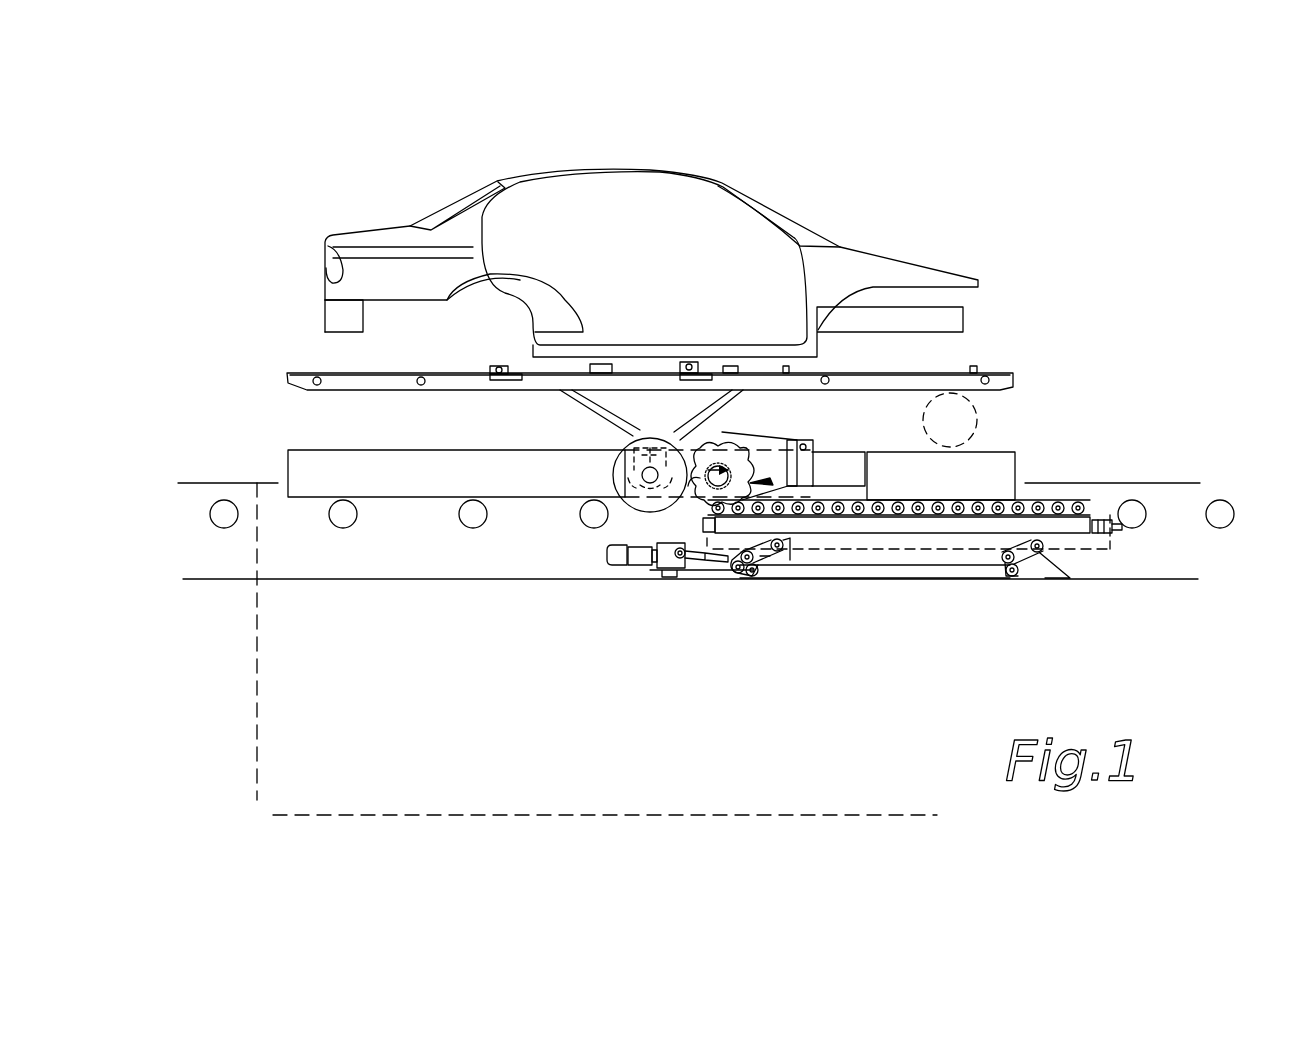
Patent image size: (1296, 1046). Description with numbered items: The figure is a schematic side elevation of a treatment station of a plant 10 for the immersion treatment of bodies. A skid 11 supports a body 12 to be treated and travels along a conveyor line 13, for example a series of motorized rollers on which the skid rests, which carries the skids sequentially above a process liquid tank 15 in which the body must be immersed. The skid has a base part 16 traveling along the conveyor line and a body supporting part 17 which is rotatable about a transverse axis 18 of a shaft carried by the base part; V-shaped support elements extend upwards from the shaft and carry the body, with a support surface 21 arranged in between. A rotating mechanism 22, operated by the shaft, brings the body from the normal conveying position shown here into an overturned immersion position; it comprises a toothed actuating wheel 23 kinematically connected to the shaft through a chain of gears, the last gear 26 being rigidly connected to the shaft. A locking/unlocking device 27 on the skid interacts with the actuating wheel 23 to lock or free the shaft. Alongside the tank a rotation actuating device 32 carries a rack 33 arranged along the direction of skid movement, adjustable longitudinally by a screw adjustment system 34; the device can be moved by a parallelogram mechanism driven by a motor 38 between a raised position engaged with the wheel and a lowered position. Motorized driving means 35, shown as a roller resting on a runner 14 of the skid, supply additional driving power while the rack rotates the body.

The plant 10 is at (886, 178).
The skid 11 is at (996, 334).
The body 12 is at (427, 222).
The conveyor line 13 is at (202, 516).
The runner 14 is at (298, 465).
The process liquid tank 15 is at (257, 648).
The base part 16 is at (300, 430).
The body supporting part 17 is at (535, 404).
The transverse axis 18 is at (613, 463).
The support surface 21 is at (1013, 378).
The rotating mechanism 22 is at (645, 425).
The toothed actuating wheel 23 is at (705, 445).
The gear 26 is at (627, 517).
The locking/unlocking device 27 is at (810, 438).
The rotation actuating device 32 is at (1044, 490).
The rack 33 is at (1067, 505).
The screw adjustment system 34 is at (1102, 533).
The motorized driving means 35 is at (977, 432).
The motor 38 is at (663, 575).